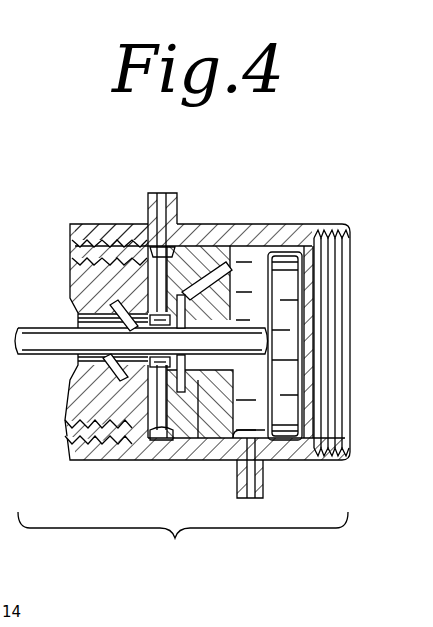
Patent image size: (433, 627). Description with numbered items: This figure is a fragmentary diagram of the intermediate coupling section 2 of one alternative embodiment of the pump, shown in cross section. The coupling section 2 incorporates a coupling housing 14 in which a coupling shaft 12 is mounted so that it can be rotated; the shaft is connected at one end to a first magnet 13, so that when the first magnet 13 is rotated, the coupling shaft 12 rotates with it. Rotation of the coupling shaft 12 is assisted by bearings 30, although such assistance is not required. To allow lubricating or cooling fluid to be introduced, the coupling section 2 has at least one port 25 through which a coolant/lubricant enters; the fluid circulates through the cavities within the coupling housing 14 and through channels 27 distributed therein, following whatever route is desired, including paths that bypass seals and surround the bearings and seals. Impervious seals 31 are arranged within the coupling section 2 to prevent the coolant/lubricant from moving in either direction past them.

The coupling section 2 is at (175, 538).
The coupling shaft 12 is at (257, 325).
The first magnet 13 is at (285, 257).
The coupling housing 14 is at (312, 240).
The port 25 is at (158, 195).
The channels 27 is at (225, 250).
The bearings 30 is at (187, 457).
The impervious seals 31 is at (122, 310).